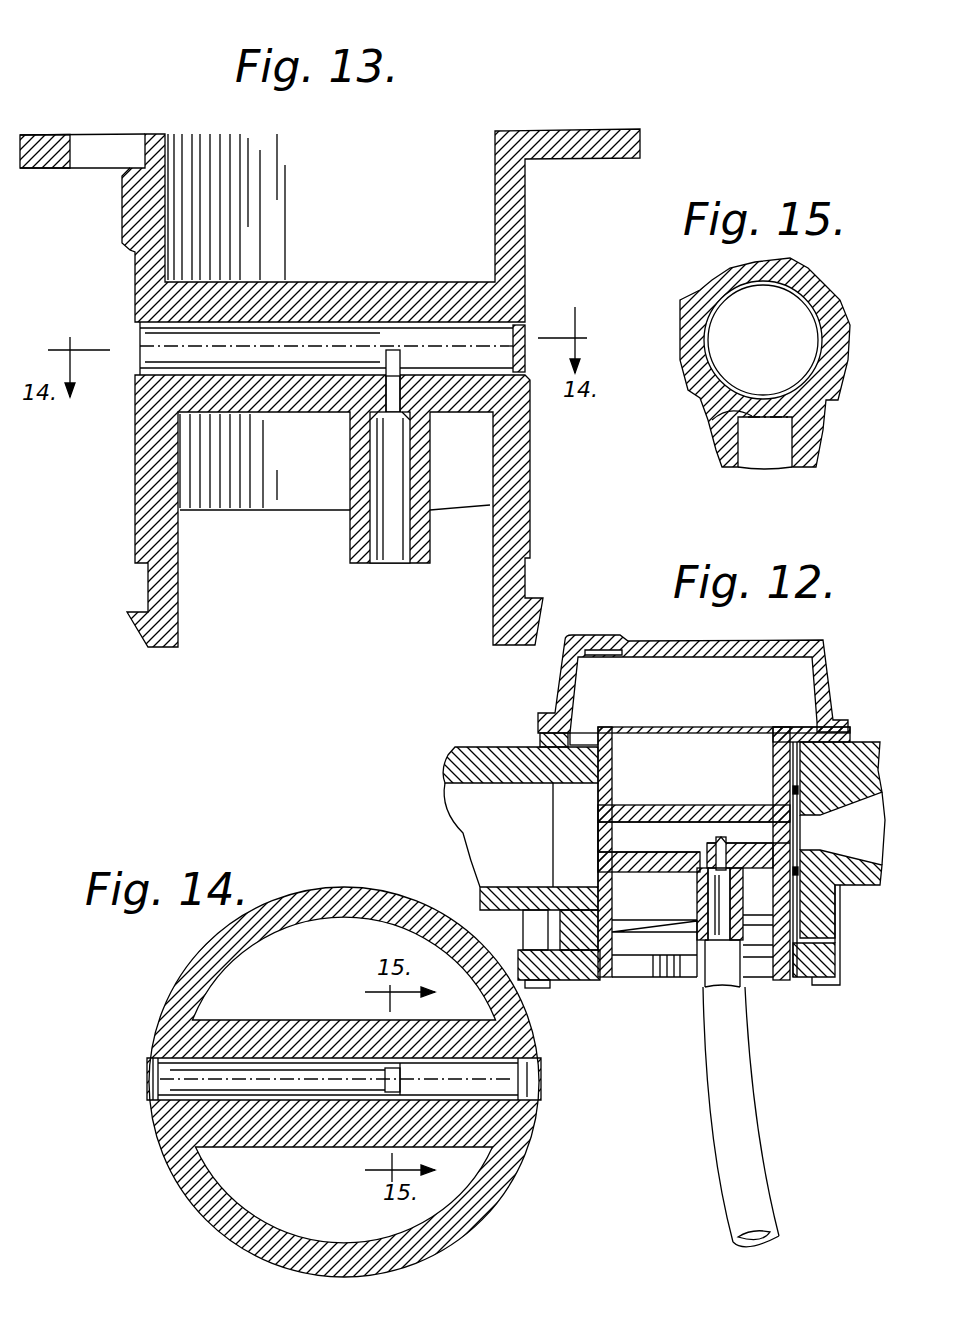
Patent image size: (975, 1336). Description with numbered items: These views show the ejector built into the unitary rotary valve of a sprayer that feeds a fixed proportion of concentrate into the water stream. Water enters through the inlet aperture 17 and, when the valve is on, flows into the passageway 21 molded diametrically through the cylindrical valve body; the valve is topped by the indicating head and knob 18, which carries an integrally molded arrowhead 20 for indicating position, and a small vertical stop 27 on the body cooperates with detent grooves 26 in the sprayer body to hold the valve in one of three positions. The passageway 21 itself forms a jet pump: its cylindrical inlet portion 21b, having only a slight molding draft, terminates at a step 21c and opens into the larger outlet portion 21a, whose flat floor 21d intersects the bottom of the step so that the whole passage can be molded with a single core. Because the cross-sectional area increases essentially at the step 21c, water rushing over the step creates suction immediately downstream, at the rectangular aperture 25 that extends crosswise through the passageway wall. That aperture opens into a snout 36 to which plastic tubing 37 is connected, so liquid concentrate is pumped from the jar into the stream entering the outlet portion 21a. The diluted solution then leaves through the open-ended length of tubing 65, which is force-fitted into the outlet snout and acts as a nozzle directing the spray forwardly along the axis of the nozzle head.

In FIG. 12, the inlet aperture 17 is at (813, 828).
In FIG. 12, the head and knob 18 is at (833, 675).
In FIG. 12, the arrowhead 20 is at (605, 633).
In FIG. 13, the passageway 21 is at (132, 334).
In FIG. 15, the passageway 21 is at (793, 303).
In FIG. 12, the passageway 21 is at (590, 838).
In FIG. 14, the passageway 21 is at (148, 1090).
In FIG. 13, the outlet portion 21a is at (258, 335).
In FIG. 14, the outlet portion 21a is at (277, 1062).
In FIG. 13, the inlet portion 21b is at (490, 333).
In FIG. 13, the step 21c is at (393, 362).
In FIG. 15, the step 21c is at (787, 407).
In FIG. 13, the flat floor 21d is at (300, 372).
In FIG. 15, the flat floor 21d is at (703, 420).
In FIG. 14, the flat floor 21d is at (257, 1093).
In FIG. 13, the aperture 25 is at (400, 403).
In FIG. 15, the aperture 25 is at (743, 446).
In FIG. 12, the aperture 25 is at (721, 836).
In FIG. 14, the aperture 25 is at (392, 1098).
In FIG. 12, the detent grooves 26 is at (562, 792).
In FIG. 13, the vertical stop 27 is at (122, 217).
In FIG. 12, the vertical stop 27 is at (608, 777).
In FIG. 14, the vertical stop 27 is at (344, 1082).
In FIG. 13, the snout 36 is at (352, 560).
In FIG. 12, the snout 36 is at (697, 905).
In FIG. 12, the plastic tubing 37 is at (747, 1088).
In FIG. 12, the tubing 65 is at (460, 820).